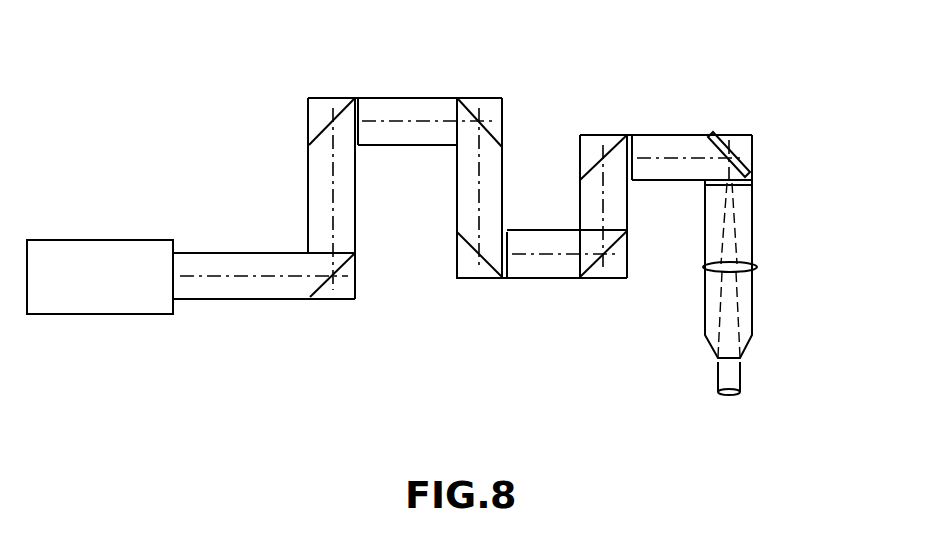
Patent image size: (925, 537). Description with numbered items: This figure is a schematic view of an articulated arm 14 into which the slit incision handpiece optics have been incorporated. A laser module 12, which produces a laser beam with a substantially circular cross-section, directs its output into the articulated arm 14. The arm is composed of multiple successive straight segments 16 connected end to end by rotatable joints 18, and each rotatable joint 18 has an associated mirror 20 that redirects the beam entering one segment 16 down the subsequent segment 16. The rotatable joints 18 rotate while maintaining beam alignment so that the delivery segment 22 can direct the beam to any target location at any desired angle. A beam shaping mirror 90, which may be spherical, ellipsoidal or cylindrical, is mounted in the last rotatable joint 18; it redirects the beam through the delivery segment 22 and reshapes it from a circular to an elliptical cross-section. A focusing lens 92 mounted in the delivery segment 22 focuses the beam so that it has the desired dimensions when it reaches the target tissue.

The laser module 12 is at (103, 309).
The articulated arm 14 is at (606, 59).
The straight segment 16 is at (250, 302).
The rotatable joint 18 is at (366, 112).
The mirror 20 is at (331, 118).
The delivery segment 22 is at (755, 232).
The beam shaping mirror 90 is at (752, 135).
The focusing lens 92 is at (750, 268).